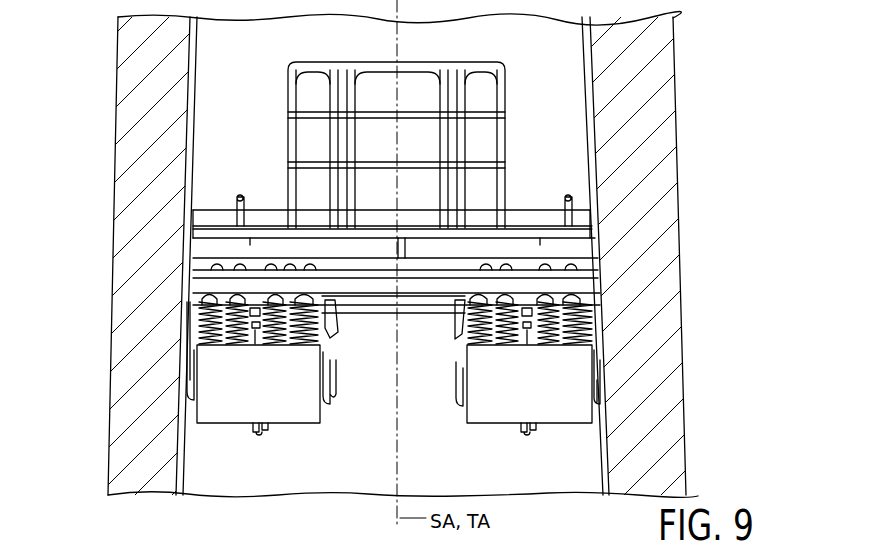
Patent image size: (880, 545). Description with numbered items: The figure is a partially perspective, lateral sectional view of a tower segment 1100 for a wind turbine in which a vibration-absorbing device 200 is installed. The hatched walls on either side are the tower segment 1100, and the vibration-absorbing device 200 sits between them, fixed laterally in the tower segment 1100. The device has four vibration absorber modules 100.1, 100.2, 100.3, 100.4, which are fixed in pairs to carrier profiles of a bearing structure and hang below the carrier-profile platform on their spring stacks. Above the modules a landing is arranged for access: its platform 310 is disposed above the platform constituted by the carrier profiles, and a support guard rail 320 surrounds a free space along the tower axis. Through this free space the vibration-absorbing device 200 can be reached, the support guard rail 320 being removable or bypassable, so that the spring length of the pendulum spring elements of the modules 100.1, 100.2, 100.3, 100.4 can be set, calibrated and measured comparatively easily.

The tower segment 1100 is at (172, 112).
The vibration-absorbing device 200 is at (616, 267).
The support guard rail 320 is at (500, 104).
The platform 310 is at (250, 252).
The vibration absorber module 100.1 is at (235, 416).
The vibration absorber module 100.2 is at (485, 412).
The vibration absorber module 100.3 is at (322, 428).
The vibration absorber module 100.4 is at (592, 426).